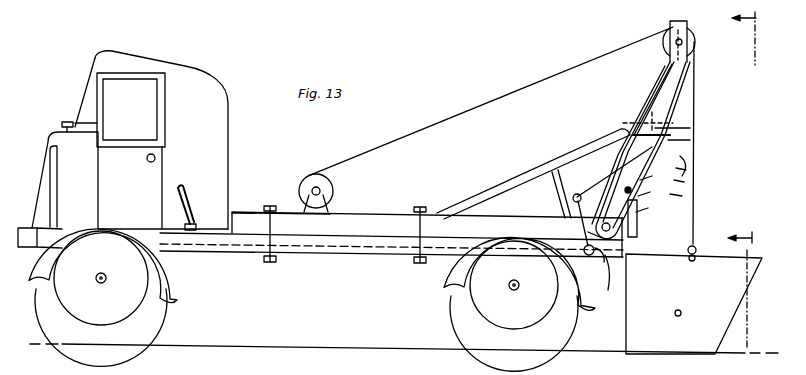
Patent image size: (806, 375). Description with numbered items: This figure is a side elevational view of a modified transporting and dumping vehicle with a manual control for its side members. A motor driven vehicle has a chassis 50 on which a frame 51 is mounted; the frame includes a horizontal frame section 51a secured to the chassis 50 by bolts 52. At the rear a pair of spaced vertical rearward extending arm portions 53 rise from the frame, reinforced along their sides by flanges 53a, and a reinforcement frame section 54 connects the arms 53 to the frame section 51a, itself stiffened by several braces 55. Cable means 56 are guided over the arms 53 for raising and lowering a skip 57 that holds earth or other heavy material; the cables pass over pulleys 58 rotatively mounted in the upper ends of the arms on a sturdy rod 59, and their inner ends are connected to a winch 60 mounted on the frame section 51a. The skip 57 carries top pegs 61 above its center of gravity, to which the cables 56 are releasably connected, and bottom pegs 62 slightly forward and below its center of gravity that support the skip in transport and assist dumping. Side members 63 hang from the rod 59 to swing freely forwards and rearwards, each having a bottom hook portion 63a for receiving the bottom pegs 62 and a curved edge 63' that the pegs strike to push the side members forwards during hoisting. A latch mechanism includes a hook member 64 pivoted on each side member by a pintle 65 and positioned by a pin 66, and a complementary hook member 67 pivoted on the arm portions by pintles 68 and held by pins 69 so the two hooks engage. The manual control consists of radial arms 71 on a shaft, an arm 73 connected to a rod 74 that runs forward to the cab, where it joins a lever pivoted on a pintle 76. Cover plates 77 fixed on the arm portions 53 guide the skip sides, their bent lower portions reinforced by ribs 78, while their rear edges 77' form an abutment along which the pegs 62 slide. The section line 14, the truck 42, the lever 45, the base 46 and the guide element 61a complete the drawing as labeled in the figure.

The section line 14 is at (742, 181).
The truck 42 is at (568, 230).
The control lever 45 is at (189, 206).
The lever base 46 is at (200, 221).
The chassis 50 is at (374, 252).
The frame 51 is at (383, 216).
The horizontal frame section 51a is at (336, 212).
The bolts 52 is at (421, 206).
The arm portions 53 is at (652, 88).
The flanges 53a is at (642, 103).
The reinforcement frame section 54 is at (566, 160).
The braces 55 is at (568, 194).
The cable means 56 is at (500, 98).
The skip 57 is at (740, 305).
The pulleys 58 is at (690, 36).
The rod 59 is at (683, 42).
The winch 60 is at (313, 182).
The top pegs 61 is at (689, 258).
The rope guide 61a is at (592, 240).
The bottom pegs 62 is at (678, 310).
The side members 63 is at (649, 92).
The hook portion 63a is at (688, 170).
The curved edges 63' is at (700, 181).
The hook member 64 is at (688, 158).
The pintle 65 is at (684, 196).
The pin 66 is at (644, 186).
The complementary hook member 67 is at (642, 200).
The pintles 68 is at (640, 214).
The pins 69 is at (628, 182).
The radial arms 71 is at (560, 206).
The arm 73 is at (591, 256).
The rod 74 is at (272, 252).
The pintle 76 is at (600, 182).
The cover plate 77 is at (688, 120).
The rear edges 77' is at (697, 133).
The ribs 78 is at (640, 236).